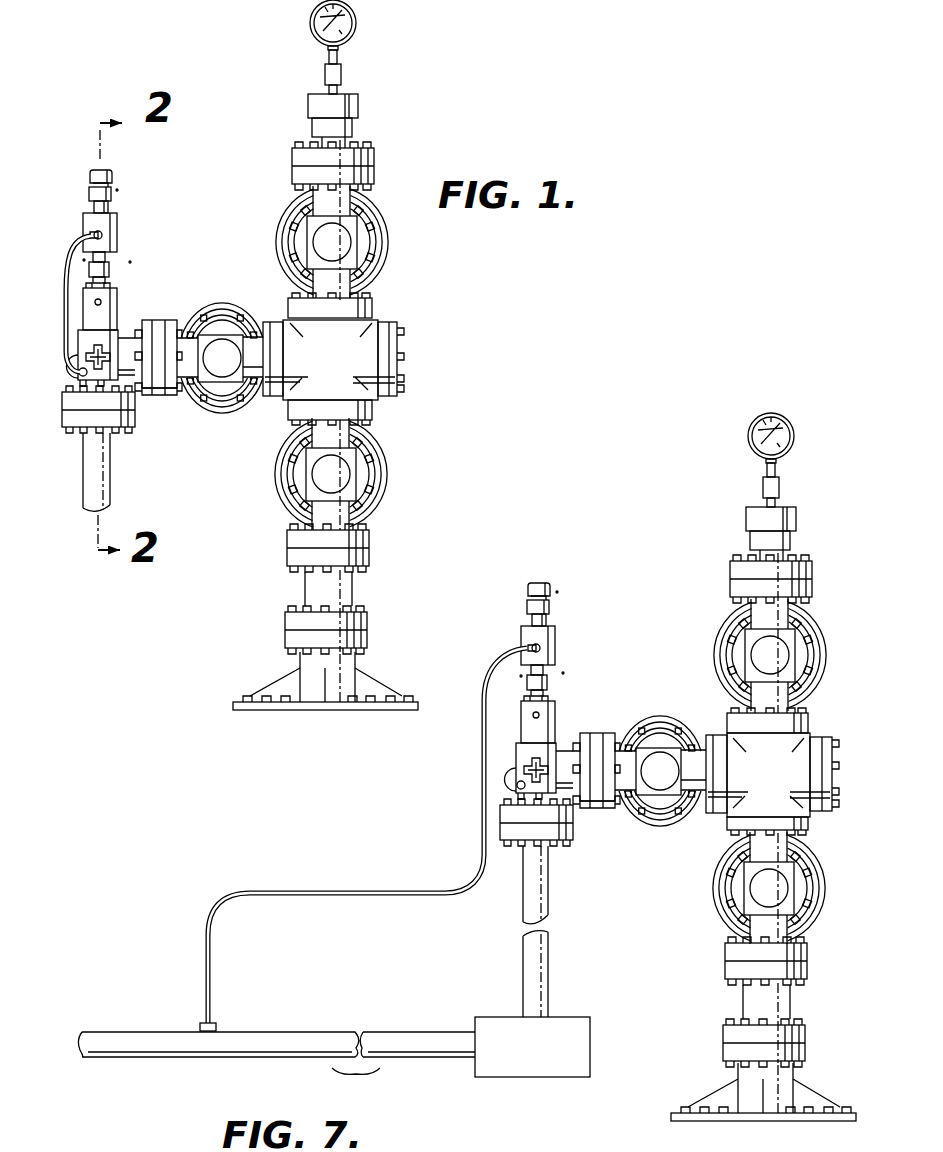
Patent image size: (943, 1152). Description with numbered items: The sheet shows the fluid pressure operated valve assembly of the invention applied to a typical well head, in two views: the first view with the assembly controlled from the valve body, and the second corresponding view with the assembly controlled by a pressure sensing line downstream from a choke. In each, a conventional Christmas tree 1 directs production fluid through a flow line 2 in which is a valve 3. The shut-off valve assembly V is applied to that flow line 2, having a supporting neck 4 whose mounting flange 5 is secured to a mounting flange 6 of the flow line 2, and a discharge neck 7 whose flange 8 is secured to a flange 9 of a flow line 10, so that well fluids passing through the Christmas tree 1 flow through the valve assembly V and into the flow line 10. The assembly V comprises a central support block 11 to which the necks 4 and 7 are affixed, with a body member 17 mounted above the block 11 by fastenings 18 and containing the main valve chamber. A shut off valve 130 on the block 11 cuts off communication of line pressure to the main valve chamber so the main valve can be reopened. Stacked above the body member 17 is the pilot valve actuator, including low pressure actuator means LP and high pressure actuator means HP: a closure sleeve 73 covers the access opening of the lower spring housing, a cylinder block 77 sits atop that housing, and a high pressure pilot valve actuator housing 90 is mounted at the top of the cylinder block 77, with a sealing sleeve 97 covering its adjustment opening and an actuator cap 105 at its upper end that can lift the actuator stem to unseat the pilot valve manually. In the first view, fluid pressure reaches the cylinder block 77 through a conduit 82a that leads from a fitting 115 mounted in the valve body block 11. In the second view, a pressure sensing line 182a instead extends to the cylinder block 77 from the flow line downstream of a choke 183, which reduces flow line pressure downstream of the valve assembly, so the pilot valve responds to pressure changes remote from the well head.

In FIG. 1, the Christmas tree 1 is at (396, 314).
In FIG. 7, the Christmas tree 1 is at (724, 820).
In FIG. 1, the flow line 2 is at (190, 346).
In FIG. 7, the flow line 2 is at (646, 742).
In FIG. 1, the valve 3 is at (223, 370).
In FIG. 7, the valve 3 is at (658, 762).
In FIG. 1, the supporting neck 4 is at (127, 328).
In FIG. 7, the supporting neck 4 is at (565, 758).
In FIG. 1, the mounting flange 5 is at (157, 327).
In FIG. 7, the mounting flange 5 is at (591, 740).
In FIG. 1, the mounting flange 6 is at (167, 383).
In FIG. 7, the mounting flange 6 is at (608, 808).
In FIG. 1, the discharge neck 7 is at (78, 385).
In FIG. 7, the discharge neck 7 is at (537, 802).
In FIG. 1, the flange 8 is at (70, 400).
In FIG. 7, the flange 8 is at (510, 812).
In FIG. 1, the flange 9 is at (72, 418).
In FIG. 7, the flange 9 is at (510, 828).
In FIG. 1, the flow line 10 is at (95, 483).
In FIG. 7, the flow line 10 is at (537, 942).
In FIG. 1, the central support block 11 is at (85, 345).
In FIG. 7, the central support block 11 is at (525, 760).
In FIG. 1, the body member 17 is at (88, 305).
In FIG. 7, the body member 17 is at (527, 723).
In FIG. 1, the fastenings 18 is at (82, 324).
In FIG. 7, the fastenings 18 is at (515, 738).
In FIG. 1, the closure sleeve 73 is at (112, 272).
In FIG. 7, the closure sleeve 73 is at (549, 686).
In FIG. 1, the cylinder block 77 is at (88, 225).
In FIG. 7, the cylinder block 77 is at (523, 640).
In FIG. 1, the high pressure pilot valve actuator housing 90 is at (108, 207).
In FIG. 7, the high pressure pilot valve actuator housing 90 is at (535, 620).
In FIG. 1, the sealing sleeve 97 is at (90, 190).
In FIG. 7, the sealing sleeve 97 is at (549, 612).
In FIG. 1, the actuator cap 105 is at (112, 176).
In FIG. 7, the actuator cap 105 is at (541, 587).
In FIG. 1, the fitting 115 is at (72, 372).
In FIG. 1, the shut off valve 130 is at (105, 370).
In FIG. 7, the shut off valve 130 is at (518, 778).
In FIG. 1, the conduit 82a is at (67, 263).
In FIG. 7, the pressure sensing line 182a is at (363, 839).
In FIG. 7, the choke 183 is at (570, 1022).
In FIG. 1, the high pressure actuator means HP is at (117, 190).
In FIG. 7, the high pressure actuator means HP is at (557, 592).
In FIG. 1, the low pressure actuator means LP is at (84, 260).
In FIG. 7, the low pressure actuator means LP is at (521, 676).
In FIG. 1, the shut-off valve assembly V is at (130, 262).
In FIG. 7, the shut-off valve assembly V is at (563, 673).